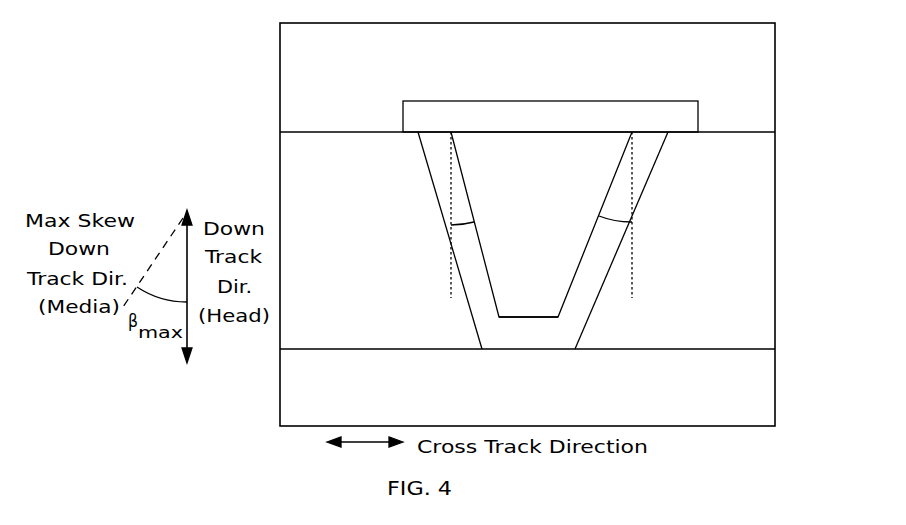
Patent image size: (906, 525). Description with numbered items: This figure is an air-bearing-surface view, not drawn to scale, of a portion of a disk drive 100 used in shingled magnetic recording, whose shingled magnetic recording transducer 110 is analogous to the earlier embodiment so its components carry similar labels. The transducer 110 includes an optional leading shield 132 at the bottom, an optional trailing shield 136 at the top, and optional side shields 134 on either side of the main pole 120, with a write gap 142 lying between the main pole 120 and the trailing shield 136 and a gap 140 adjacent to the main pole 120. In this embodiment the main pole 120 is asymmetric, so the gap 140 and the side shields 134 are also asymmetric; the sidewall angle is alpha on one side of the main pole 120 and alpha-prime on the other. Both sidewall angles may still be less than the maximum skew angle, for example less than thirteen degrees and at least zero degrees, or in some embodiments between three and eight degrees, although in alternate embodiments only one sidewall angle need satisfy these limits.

The disk drive 100 is at (243, 34).
The shingled magnetic recording transducer 110 is at (527, 224).
The write gap 142 is at (403, 116).
The optional trailing shield 136 is at (527, 71).
The optional side shields 134 is at (530, 240).
The main pole 120 is at (541, 224).
The gap 140 is at (528, 332).
The optional leading shield 132 is at (527, 389).